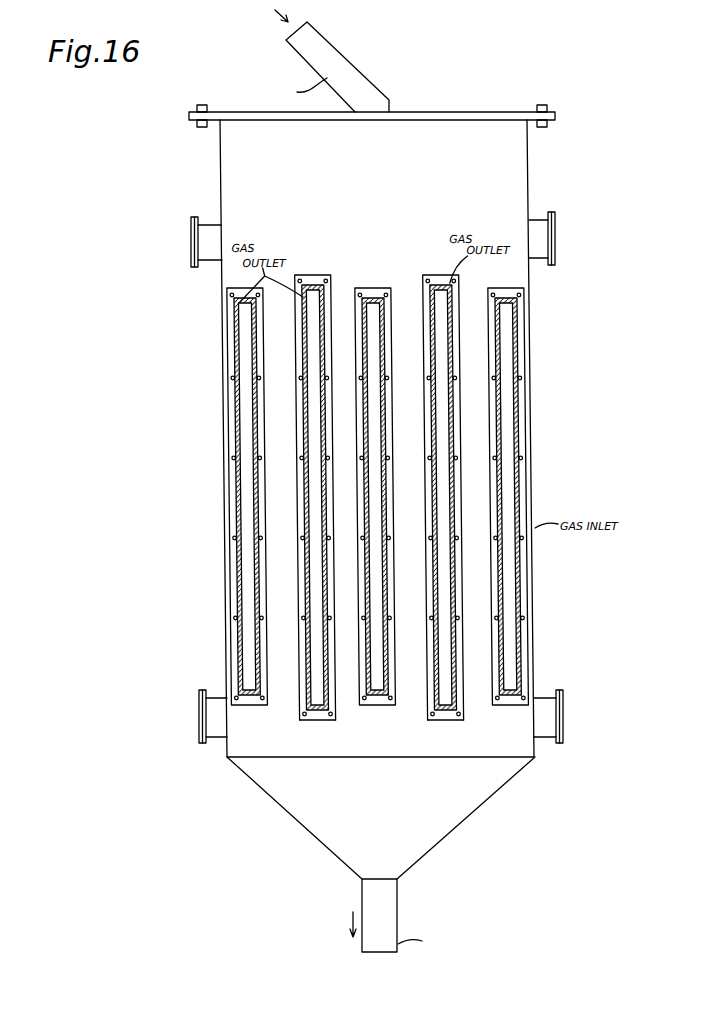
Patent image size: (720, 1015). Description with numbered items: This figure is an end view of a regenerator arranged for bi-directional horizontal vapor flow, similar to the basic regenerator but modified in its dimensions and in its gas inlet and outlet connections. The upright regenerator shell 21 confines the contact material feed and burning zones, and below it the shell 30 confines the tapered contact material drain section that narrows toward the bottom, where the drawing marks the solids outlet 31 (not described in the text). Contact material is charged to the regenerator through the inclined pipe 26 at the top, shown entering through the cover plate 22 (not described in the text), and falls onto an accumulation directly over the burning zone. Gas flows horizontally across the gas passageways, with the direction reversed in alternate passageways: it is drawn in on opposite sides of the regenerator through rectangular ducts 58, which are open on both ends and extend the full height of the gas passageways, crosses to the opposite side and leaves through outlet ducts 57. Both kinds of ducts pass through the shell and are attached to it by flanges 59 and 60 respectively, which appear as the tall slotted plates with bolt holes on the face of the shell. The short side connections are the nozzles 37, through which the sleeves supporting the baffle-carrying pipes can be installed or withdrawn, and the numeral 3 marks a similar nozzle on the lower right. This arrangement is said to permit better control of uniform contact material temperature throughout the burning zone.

The nozzle 3 is at (547, 697).
The regenerator shell 21 is at (532, 173).
The top cover plate 22 is at (492, 111).
The pipe 26 is at (360, 71).
The shell 30 is at (309, 830).
The solids outlet pipe 31 is at (398, 910).
The nozzles 37 is at (210, 224).
The outlet ducts 57 is at (437, 698).
The rectangular ducts 58 is at (385, 470).
The flanges 59 is at (330, 286).
The flanges 60 is at (369, 289).